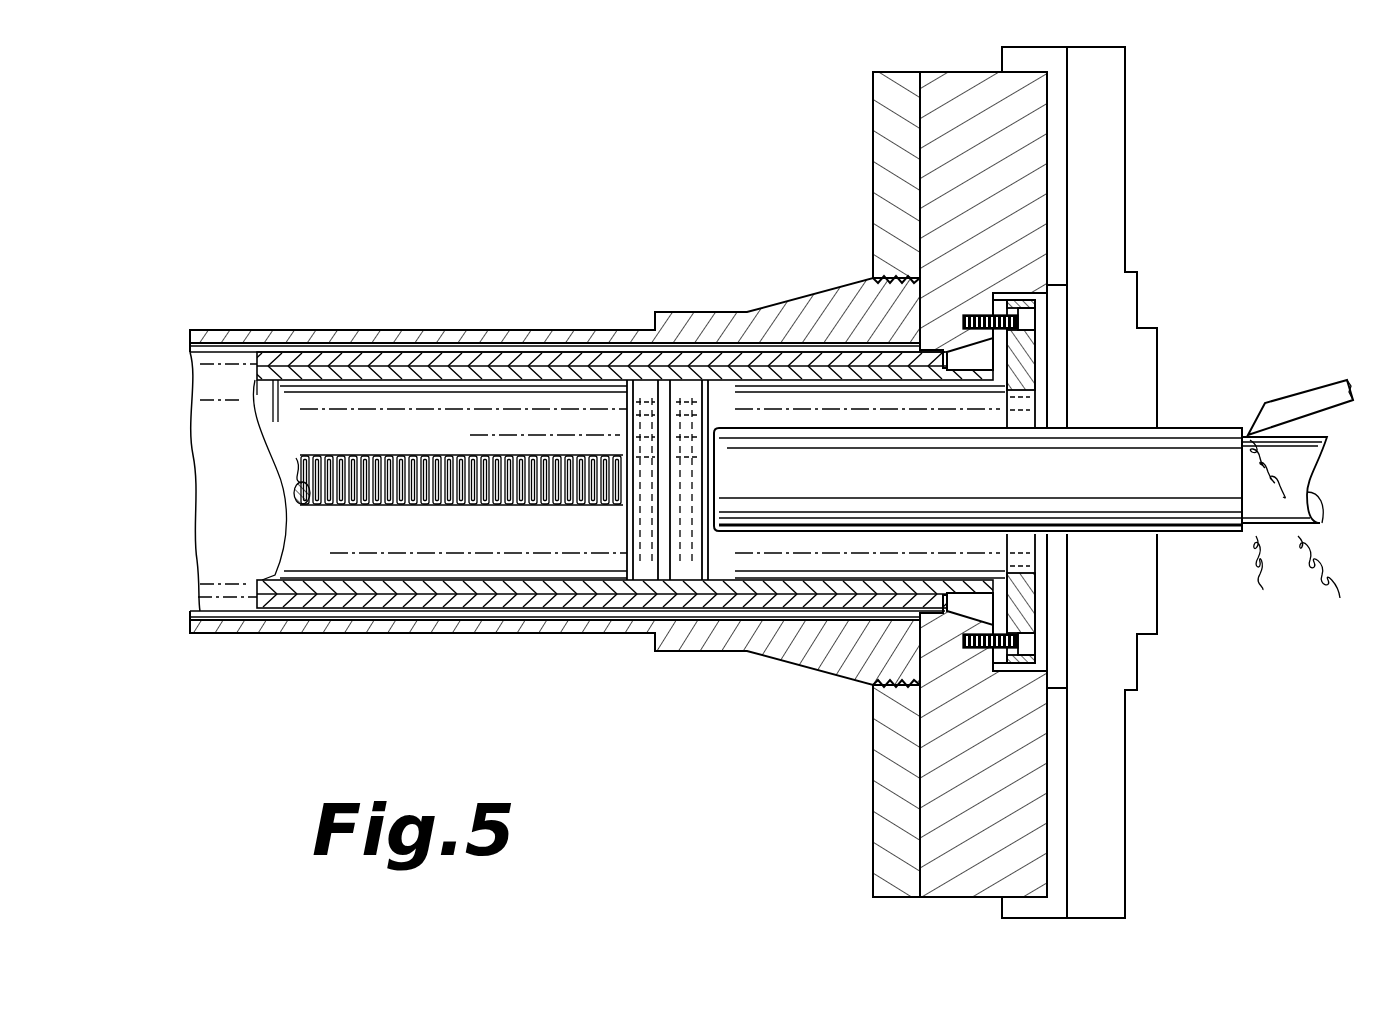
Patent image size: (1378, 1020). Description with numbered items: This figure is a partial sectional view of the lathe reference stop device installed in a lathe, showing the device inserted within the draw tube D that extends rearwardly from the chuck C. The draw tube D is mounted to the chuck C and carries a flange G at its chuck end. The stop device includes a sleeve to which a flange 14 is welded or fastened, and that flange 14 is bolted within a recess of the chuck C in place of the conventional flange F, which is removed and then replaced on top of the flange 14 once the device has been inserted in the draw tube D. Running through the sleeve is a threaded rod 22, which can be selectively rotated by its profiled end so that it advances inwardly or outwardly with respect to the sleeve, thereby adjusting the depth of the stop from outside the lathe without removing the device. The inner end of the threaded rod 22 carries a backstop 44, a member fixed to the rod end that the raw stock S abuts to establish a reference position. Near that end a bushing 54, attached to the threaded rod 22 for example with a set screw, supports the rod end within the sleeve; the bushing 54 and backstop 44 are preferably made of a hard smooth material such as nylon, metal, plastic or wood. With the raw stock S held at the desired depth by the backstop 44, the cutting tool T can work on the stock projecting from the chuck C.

The flange G is at (963, 76).
The chuck C is at (1108, 90).
The draw tube D is at (505, 335).
The flange 14 is at (989, 313).
The conventional flange F is at (1045, 372).
The tool T is at (1300, 405).
The raw stock S is at (1206, 450).
The threaded rod 22 is at (430, 505).
The bushing 54 is at (640, 522).
The backstop 44 is at (705, 540).